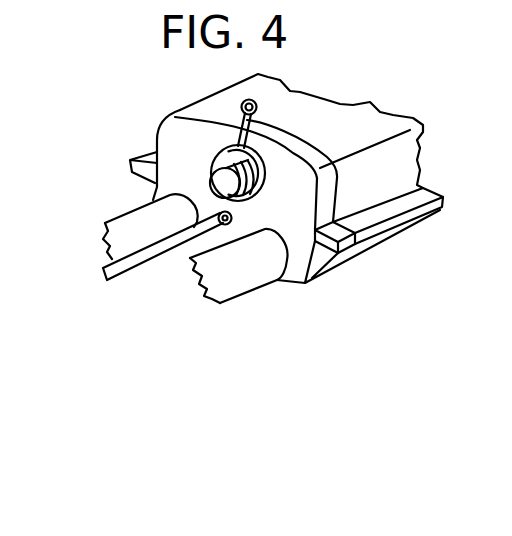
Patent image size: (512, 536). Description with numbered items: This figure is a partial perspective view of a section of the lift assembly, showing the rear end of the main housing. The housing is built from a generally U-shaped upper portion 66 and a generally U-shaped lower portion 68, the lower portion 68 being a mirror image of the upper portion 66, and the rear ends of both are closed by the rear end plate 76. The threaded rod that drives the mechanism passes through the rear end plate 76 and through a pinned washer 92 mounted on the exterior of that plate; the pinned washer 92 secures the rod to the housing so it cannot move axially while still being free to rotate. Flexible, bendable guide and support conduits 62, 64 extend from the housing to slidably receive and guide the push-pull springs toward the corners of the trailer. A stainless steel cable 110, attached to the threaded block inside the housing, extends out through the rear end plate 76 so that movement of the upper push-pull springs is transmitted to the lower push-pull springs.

The guide and support conduit 62 is at (247, 280).
The guide and support conduit 64 is at (105, 227).
The upper portion 66 is at (357, 128).
The lower portion 68 is at (389, 258).
The rear end plate 76 is at (302, 257).
The pinned washer 92 is at (263, 165).
The cable 110 is at (130, 270).